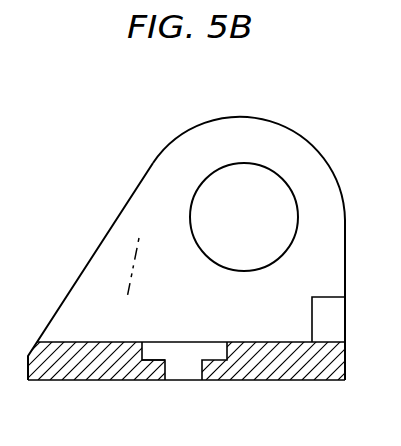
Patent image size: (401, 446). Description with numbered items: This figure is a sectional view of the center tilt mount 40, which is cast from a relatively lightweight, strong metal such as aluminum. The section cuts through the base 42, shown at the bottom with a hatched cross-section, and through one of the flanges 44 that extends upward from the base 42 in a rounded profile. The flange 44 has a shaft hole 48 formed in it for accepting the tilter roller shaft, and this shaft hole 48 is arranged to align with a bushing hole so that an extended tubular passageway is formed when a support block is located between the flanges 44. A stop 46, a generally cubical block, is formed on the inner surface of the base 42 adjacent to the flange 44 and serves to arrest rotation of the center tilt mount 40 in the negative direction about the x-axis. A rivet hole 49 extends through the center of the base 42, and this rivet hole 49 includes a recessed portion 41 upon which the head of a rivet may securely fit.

The center tilt mount 40 is at (93, 190).
The recessed portion 41 is at (153, 342).
The base 42 is at (282, 379).
The flange 44 is at (280, 133).
The stop 46 is at (312, 325).
The shaft hole 48 is at (217, 247).
The rivet hole 49 is at (198, 352).